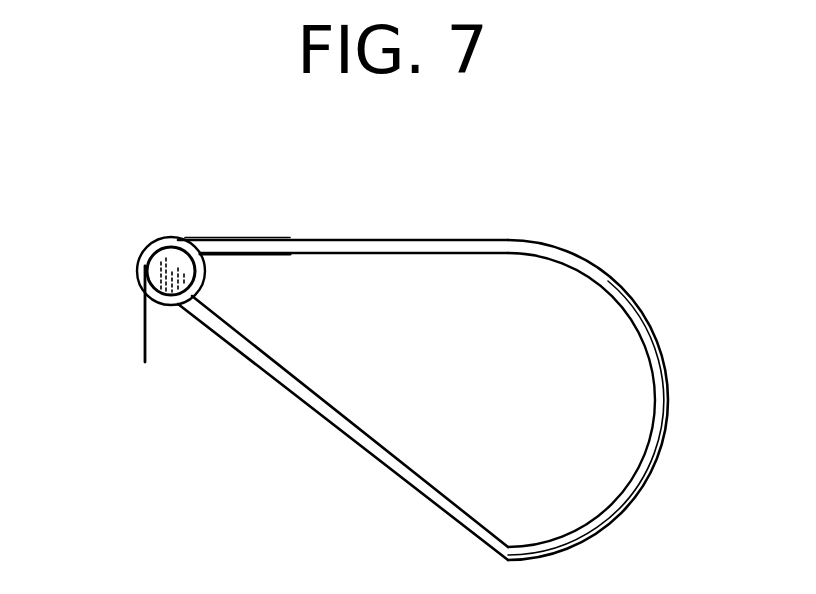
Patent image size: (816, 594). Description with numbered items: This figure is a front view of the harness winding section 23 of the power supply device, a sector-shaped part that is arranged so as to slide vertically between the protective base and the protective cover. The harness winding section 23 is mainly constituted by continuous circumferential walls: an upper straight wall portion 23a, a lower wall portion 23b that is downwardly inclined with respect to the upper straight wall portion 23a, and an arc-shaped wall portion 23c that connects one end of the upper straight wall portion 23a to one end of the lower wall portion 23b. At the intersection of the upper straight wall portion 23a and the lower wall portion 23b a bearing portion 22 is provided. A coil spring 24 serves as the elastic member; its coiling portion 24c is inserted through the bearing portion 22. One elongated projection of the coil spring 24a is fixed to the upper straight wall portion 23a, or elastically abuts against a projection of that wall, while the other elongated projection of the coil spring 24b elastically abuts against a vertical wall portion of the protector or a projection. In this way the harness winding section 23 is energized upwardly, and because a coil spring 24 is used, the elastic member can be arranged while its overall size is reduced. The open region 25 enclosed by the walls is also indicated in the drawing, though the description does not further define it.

The bearing portion 22 is at (180, 255).
The harness winding section 23 is at (513, 237).
The upper straight wall portion 23a is at (405, 238).
The lower wall portion 23b is at (380, 470).
The arc-shaped wall portion 23c is at (657, 470).
The coil spring 24 is at (142, 313).
The elongated projection of the coil spring 24a is at (252, 243).
The elongated projection of the coil spring 24b is at (142, 340).
The coiling portion 24c is at (150, 248).
The opening 25 is at (322, 363).